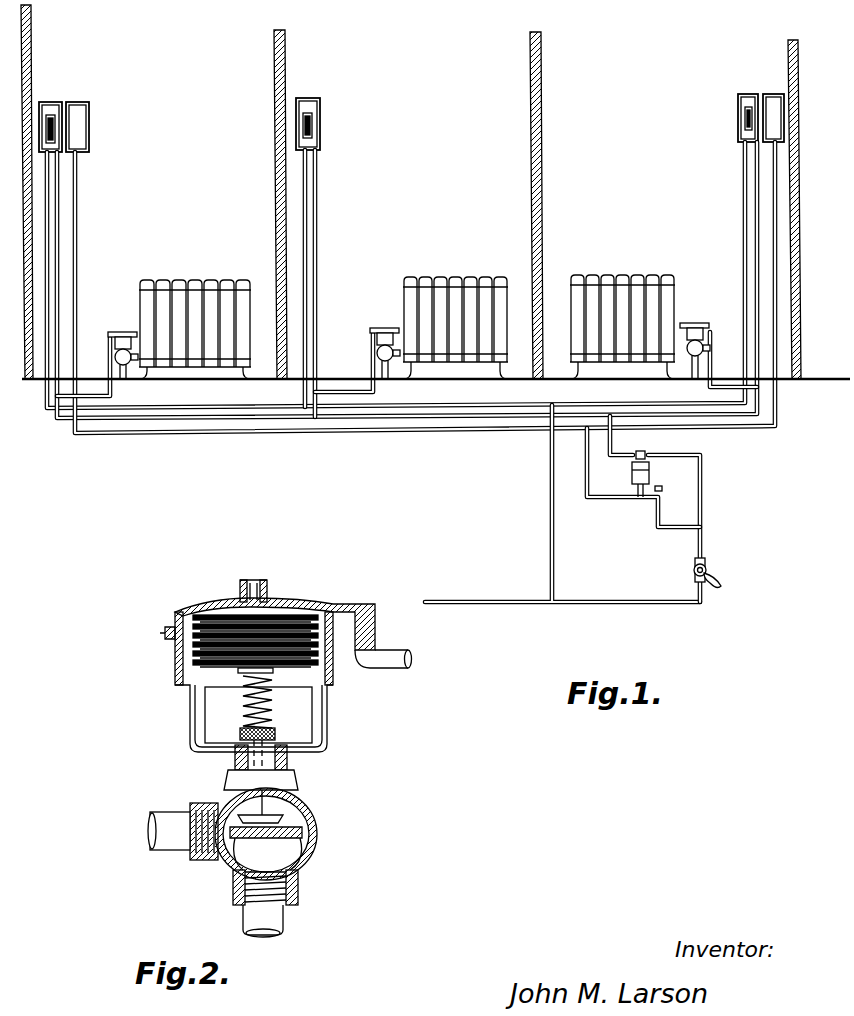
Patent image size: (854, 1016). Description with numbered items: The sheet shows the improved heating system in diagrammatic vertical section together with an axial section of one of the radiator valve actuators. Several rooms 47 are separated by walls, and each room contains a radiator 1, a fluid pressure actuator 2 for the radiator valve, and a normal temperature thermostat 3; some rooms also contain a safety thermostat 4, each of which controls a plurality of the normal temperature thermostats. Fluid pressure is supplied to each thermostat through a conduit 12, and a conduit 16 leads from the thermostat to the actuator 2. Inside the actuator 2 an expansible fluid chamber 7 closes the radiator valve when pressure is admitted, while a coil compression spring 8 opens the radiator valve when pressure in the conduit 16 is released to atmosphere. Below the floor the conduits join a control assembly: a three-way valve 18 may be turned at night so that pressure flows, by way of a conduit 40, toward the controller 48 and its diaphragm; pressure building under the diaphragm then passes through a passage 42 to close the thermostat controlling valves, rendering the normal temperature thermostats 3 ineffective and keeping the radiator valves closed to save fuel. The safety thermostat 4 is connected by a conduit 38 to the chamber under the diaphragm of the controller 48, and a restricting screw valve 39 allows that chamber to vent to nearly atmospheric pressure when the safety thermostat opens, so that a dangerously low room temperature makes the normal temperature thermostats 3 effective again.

In FIG. 1, the radiator 1 is at (193, 292).
In FIG. 1, the fluid pressure actuator 2 is at (121, 332).
In FIG. 2, the fluid pressure actuator 2 is at (340, 710).
In FIG. 1, the normal temperature thermostat 3 is at (48, 112).
In FIG. 1, the safety thermostat 4 is at (80, 130).
In FIG. 2, the expansible fluid chamber 7 is at (283, 632).
In FIG. 2, the coil compression spring 8 is at (272, 718).
In FIG. 1, the conduit 12 is at (742, 170).
In FIG. 1, the conduit 16 is at (753, 188).
In FIG. 2, the conduit 16 is at (390, 660).
In FIG. 1, the three-way valve 18 is at (707, 567).
In FIG. 1, the conduit 38 is at (727, 429).
In FIG. 1, the screw valve 39 is at (657, 508).
In FIG. 1, the conduit 40 is at (674, 518).
In FIG. 1, the passage 42 is at (625, 435).
In FIG. 1, the room 47 is at (411, 192).
In FIG. 1, the controller 48 is at (650, 468).